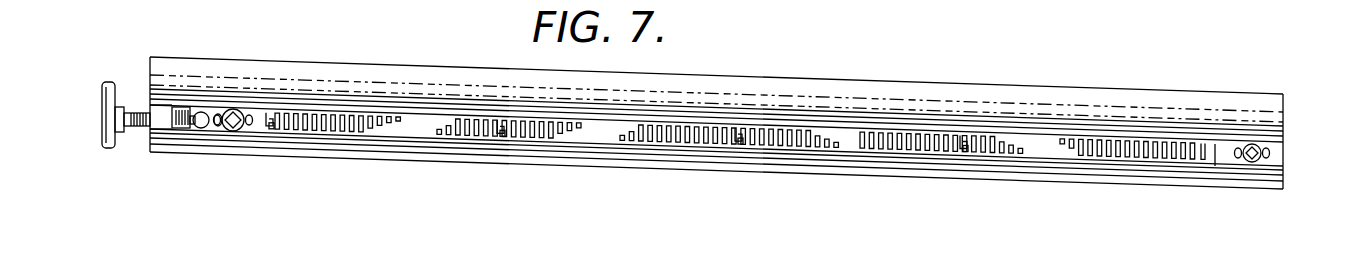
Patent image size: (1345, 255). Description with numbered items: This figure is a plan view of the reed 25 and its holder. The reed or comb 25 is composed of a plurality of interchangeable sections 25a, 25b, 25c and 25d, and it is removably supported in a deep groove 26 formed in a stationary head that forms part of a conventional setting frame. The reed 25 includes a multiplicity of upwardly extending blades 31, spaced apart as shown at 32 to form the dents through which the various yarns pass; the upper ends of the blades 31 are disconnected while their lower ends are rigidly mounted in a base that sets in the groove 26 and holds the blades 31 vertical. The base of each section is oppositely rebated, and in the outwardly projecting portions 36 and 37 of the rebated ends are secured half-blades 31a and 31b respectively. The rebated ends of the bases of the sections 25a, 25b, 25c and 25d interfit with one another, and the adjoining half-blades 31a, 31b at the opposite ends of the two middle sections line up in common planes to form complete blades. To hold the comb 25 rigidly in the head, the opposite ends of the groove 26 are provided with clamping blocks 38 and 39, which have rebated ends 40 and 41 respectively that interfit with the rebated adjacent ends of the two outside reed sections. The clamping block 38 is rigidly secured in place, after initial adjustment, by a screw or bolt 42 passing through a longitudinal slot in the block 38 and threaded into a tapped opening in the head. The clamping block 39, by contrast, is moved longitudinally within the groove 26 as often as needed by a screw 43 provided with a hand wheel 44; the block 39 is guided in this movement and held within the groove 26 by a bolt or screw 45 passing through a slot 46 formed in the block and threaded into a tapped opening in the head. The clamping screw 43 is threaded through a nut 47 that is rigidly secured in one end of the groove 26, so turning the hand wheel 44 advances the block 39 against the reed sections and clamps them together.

The reed 25 is at (773, 120).
The reed section 25a is at (412, 130).
The reed section 25b is at (600, 135).
The reed section 25c is at (830, 148).
The reed section 25d is at (1052, 152).
The groove 26 is at (185, 130).
The blade 31 is at (328, 117).
The half-blade 31a is at (280, 114).
The half-blade 31b is at (497, 137).
The spacing between blades 32 is at (343, 131).
The outwardly projecting portion 36 is at (262, 110).
The outwardly projecting portion 37 is at (505, 140).
The clamping block 38 is at (1225, 157).
The clamping block 39 is at (210, 128).
The rebated end 40 is at (1205, 147).
The rebated end 41 is at (273, 128).
The screw or bolt 42 is at (1256, 148).
The screw 43 is at (135, 128).
The hand wheel 44 is at (103, 88).
The bolt or screw 45 is at (232, 109).
The slot 46 is at (216, 114).
The nut 47 is at (160, 124).